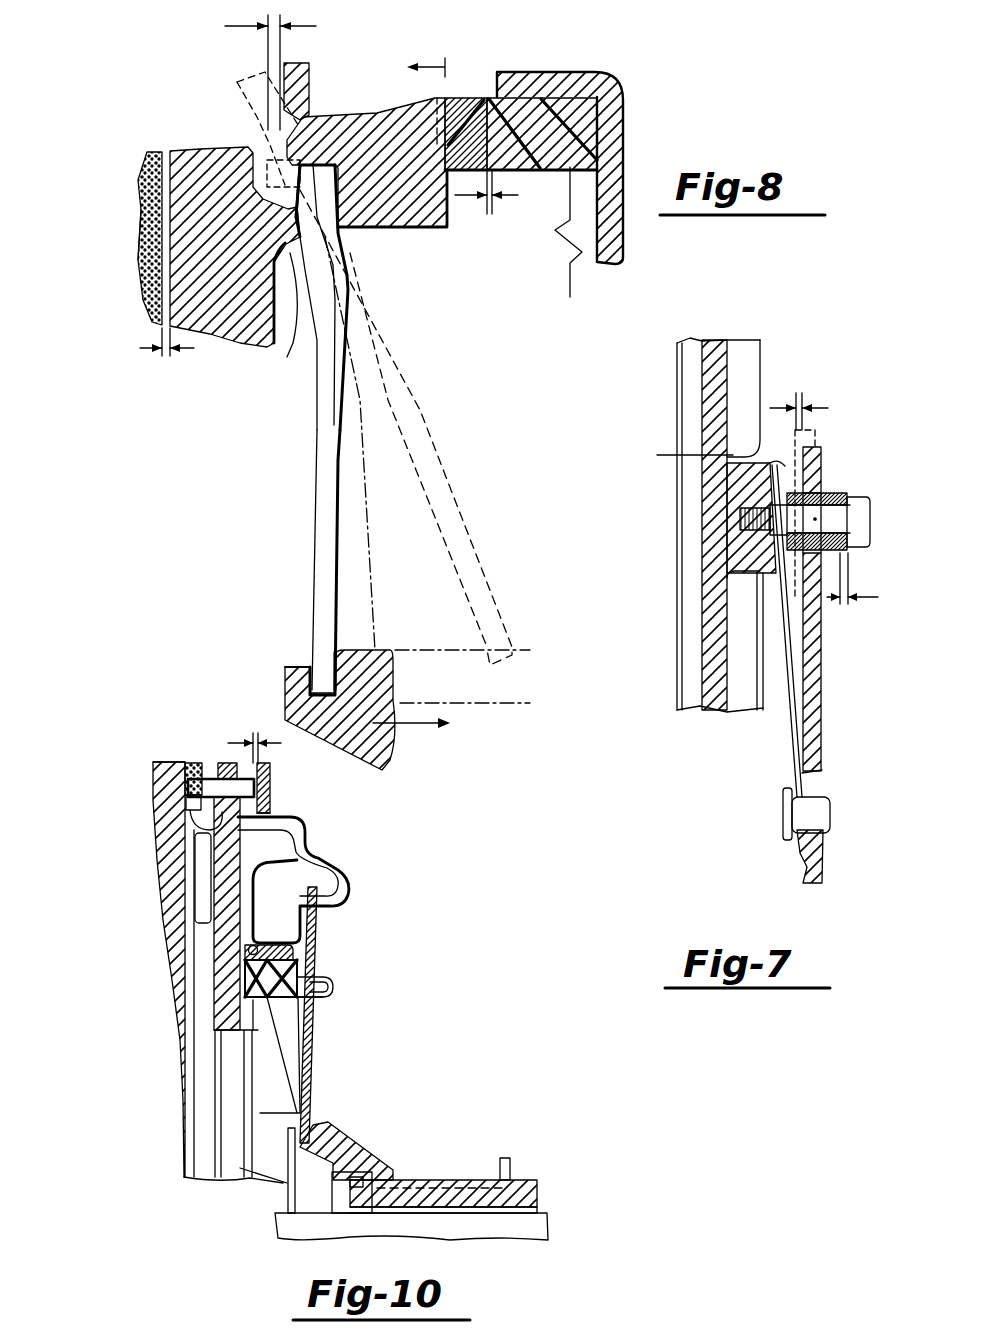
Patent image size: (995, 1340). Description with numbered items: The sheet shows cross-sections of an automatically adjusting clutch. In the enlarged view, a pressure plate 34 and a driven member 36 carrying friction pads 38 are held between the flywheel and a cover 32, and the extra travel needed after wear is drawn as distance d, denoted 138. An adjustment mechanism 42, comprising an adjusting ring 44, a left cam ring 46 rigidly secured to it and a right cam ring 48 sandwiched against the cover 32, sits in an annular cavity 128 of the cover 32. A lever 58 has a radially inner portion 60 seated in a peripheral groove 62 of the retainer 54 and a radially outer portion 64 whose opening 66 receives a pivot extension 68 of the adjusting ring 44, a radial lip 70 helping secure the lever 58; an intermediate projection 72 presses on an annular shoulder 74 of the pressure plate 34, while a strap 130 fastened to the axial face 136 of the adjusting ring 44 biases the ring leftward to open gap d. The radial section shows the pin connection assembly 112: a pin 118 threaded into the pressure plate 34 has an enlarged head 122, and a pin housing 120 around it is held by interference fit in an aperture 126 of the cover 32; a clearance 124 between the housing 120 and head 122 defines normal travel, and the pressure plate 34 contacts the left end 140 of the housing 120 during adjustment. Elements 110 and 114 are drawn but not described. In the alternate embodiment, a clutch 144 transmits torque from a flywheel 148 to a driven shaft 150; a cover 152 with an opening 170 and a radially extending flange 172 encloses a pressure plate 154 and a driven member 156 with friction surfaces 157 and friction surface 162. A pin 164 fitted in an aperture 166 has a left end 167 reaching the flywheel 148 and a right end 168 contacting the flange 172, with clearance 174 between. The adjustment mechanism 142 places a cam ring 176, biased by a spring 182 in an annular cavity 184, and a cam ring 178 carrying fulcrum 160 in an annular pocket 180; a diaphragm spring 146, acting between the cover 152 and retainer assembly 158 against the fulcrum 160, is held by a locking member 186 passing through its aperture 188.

In FIG. 8, the pressure plate 34 is at (188, 173).
In FIG. 7, the pressure plate 34 is at (713, 390).
In FIG. 8, the friction pad 38 is at (143, 180).
In FIG. 8, the driven member 36 is at (126, 291).
In FIG. 8, the additional increment of travel 138 is at (157, 355).
In FIG. 7, the additional increment of travel 138 is at (846, 503).
In FIG. 8, the annular shoulder 74 is at (273, 347).
In FIG. 8, the projection 72 is at (313, 245).
In FIG. 8, the lever 58 is at (312, 471).
In FIG. 8, the radial lip 70 is at (260, 163).
In FIG. 8, the pivot extension 68 is at (300, 135).
In FIG. 8, the opening 66 is at (318, 150).
In FIG. 8, the adjusting ring 44 is at (388, 113).
In FIG. 8, the axial face 136 is at (387, 228).
In FIG. 8, the radially outer portion 64 is at (297, 80).
In FIG. 8, the left cam ring 46 is at (468, 107).
In FIG. 8, the adjustment mechanism 42 is at (491, 68).
In FIG. 8, the right cam ring 48 is at (567, 100).
In FIG. 8, the cover 32 is at (612, 205).
In FIG. 7, the cover 32 is at (815, 690).
In FIG. 8, the retainer 54 is at (390, 686).
In FIG. 8, the radially inner portion 60 is at (323, 677).
In FIG. 8, the peripheral groove 62 is at (310, 670).
In FIG. 8, the annular cavity 128 is at (414, 745).
In FIG. 7, the left end 140 is at (668, 458).
In FIG. 7, the spring 110 is at (787, 697).
In FIG. 7, the strap 130 is at (780, 463).
In FIG. 7, the aperture 126 is at (826, 493).
In FIG. 7, the pin housing 120 is at (842, 495).
In FIG. 7, the pin 118 is at (827, 520).
In FIG. 7, the enlarged head 122 is at (864, 523).
In FIG. 7, the clearance 124 is at (879, 583).
In FIG. 7, the pin connection assembly 112 is at (835, 565).
In FIG. 7, the stop 114 is at (817, 794).
In FIG. 10, the flywheel 148 is at (160, 790).
In FIG. 10, the opening 170 is at (170, 760).
In FIG. 10, the left end 167 is at (185, 762).
In FIG. 10, the pressure plate 154 is at (213, 763).
In FIG. 10, the pin 164 is at (245, 763).
In FIG. 10, the clearance 174 is at (281, 748).
In FIG. 10, the radially extending flange 172 is at (272, 773).
In FIG. 10, the right end 168 is at (275, 790).
In FIG. 10, the aperture 166 is at (170, 822).
In FIG. 10, the friction surfaces 157 is at (207, 883).
In FIG. 10, the driven member 156 is at (160, 887).
In FIG. 10, the friction surface 162 is at (180, 930).
In FIG. 10, the cover 152 is at (345, 845).
In FIG. 10, the diaphragm spring 146 is at (317, 910).
In FIG. 10, the spring 182 is at (295, 943).
In FIG. 10, the annular cavity 184 is at (247, 953).
In FIG. 10, the annular pocket 180 is at (247, 980).
In FIG. 10, the cam ring 178 is at (302, 972).
In FIG. 10, the fulcrum 160 is at (328, 985).
In FIG. 10, the locking member 186 is at (320, 998).
In FIG. 10, the cam ring 176 is at (247, 1003).
In FIG. 10, the adjustment mechanism 142 is at (295, 1025).
In FIG. 10, the clutch 144 is at (375, 965).
In FIG. 10, the aperture 188 is at (308, 1068).
In FIG. 10, the retainer assembly 158 is at (367, 1157).
In FIG. 10, the driven shaft 150 is at (532, 1218).